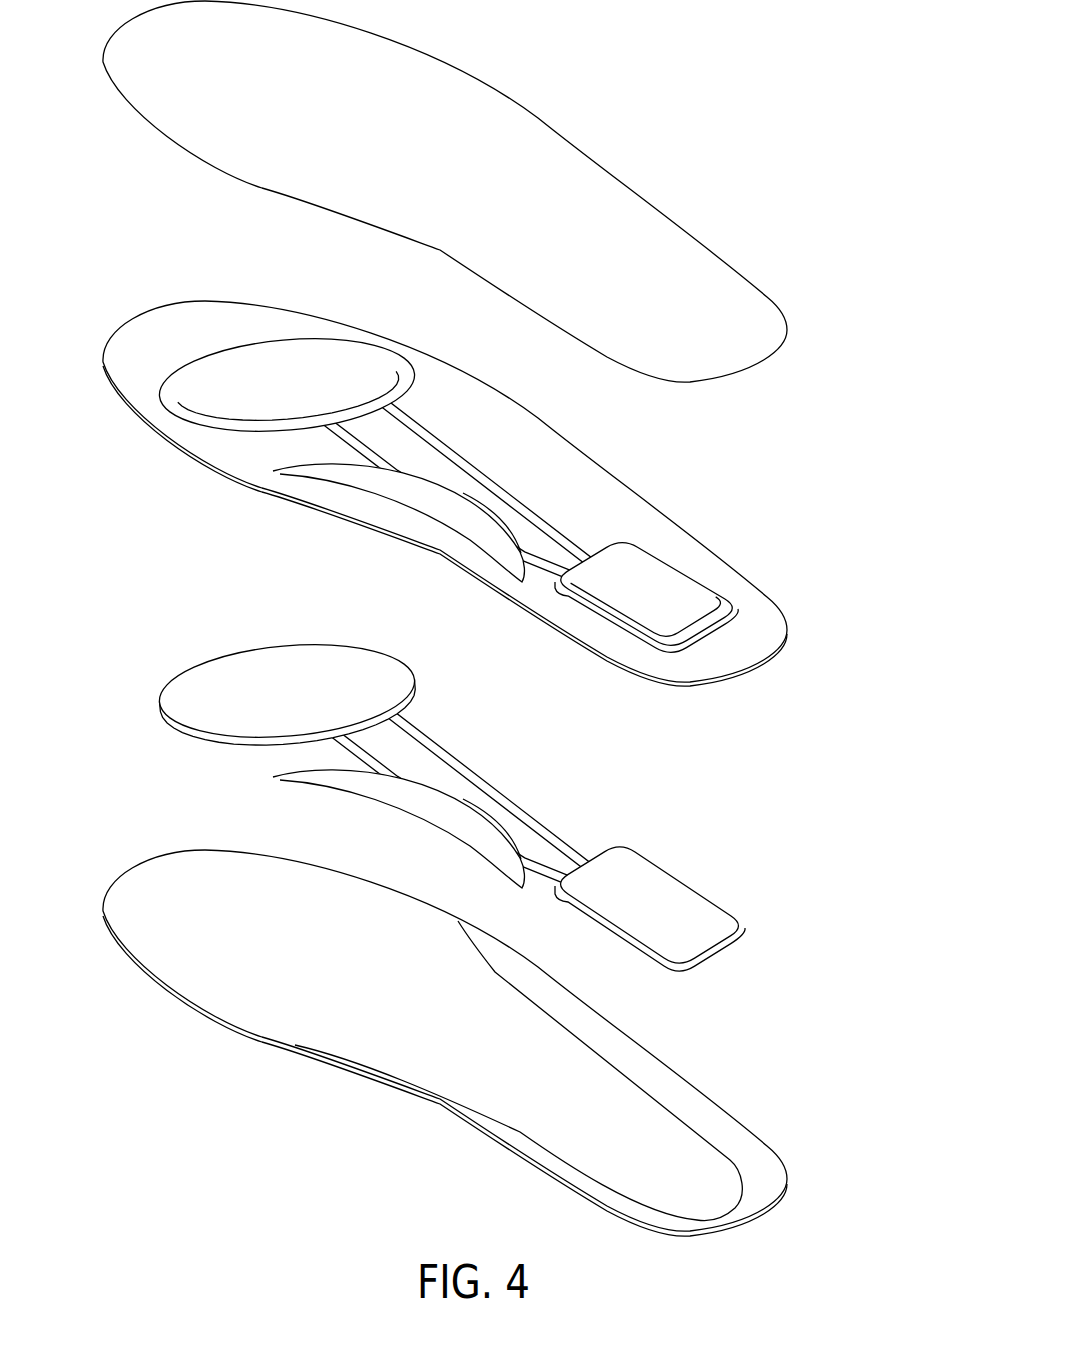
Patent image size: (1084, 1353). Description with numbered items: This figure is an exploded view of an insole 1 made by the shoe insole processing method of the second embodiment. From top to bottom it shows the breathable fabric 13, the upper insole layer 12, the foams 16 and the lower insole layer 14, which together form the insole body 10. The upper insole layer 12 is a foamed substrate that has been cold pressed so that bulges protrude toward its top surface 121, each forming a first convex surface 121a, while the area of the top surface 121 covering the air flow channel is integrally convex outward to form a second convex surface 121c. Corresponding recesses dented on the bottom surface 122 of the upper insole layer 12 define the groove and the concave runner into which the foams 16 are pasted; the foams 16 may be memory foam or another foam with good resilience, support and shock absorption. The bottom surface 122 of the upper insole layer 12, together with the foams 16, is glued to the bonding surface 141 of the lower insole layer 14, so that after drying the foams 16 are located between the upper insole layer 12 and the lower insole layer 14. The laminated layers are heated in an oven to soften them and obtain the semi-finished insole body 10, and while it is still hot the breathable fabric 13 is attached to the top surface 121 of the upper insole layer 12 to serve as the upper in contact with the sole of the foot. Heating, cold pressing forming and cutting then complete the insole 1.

The insole 1 is at (673, 90).
The insole body 10 is at (848, 270).
The upper insole layer 12 is at (470, 525).
The top surface 121 is at (653, 670).
The first convex surface 121a is at (223, 418).
The second convex surface 121c is at (547, 558).
The bottom surface 122 is at (630, 668).
The breathable fabric 13 is at (752, 322).
The lower insole layer 14 is at (471, 1043).
The bonding surface 141 is at (478, 1053).
The foams 16 is at (688, 905).